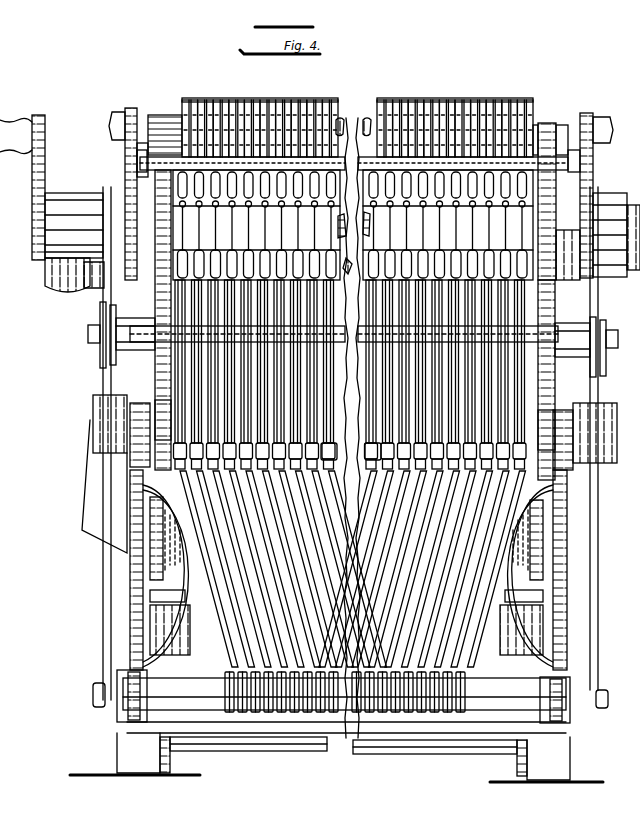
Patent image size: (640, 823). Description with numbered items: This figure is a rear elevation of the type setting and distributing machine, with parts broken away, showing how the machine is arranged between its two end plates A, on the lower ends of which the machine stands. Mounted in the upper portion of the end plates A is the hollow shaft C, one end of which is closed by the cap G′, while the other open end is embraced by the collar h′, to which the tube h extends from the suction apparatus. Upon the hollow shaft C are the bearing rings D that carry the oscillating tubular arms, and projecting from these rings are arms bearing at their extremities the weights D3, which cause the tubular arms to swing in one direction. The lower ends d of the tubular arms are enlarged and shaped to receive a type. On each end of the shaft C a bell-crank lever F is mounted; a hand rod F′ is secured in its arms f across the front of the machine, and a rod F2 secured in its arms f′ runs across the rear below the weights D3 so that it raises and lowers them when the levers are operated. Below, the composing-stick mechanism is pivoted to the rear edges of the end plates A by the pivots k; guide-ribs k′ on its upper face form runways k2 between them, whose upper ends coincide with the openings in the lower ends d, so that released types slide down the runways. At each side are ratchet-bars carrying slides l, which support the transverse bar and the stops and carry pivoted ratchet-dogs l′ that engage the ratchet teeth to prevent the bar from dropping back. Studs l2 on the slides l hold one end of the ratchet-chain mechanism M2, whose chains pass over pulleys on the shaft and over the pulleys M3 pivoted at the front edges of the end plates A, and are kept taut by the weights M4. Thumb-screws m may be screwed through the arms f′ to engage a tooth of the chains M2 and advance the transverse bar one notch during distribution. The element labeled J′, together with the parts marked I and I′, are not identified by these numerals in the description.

The arms f is at (131, 107).
The arms f′ is at (124, 161).
The side plate J′ is at (31, 165).
The collar h′ is at (66, 192).
The tube h is at (46, 272).
The cap G′ is at (612, 203).
The thumb-screws m is at (155, 260).
The pulleys M3 is at (99, 312).
The end plates A is at (154, 373).
The ratchet-chain mechanism M2 is at (102, 377).
The weights M4 is at (93, 410).
The runways k2 is at (200, 493).
The pivots k is at (138, 525).
The guide-ribs k′ is at (222, 646).
The studs l2 is at (94, 685).
The slides l is at (117, 706).
The ratchet-dogs l′ is at (140, 702).
The shaft I′ is at (200, 702).
The disk stack I is at (252, 712).
The weights D3 is at (270, 99).
The hand rod F′ is at (546, 122).
The rod F2 is at (566, 124).
The bell-crank lever F is at (582, 220).
The bearing rings D is at (318, 194).
The hollow shaft C is at (352, 256).
The lower ends d is at (331, 443).